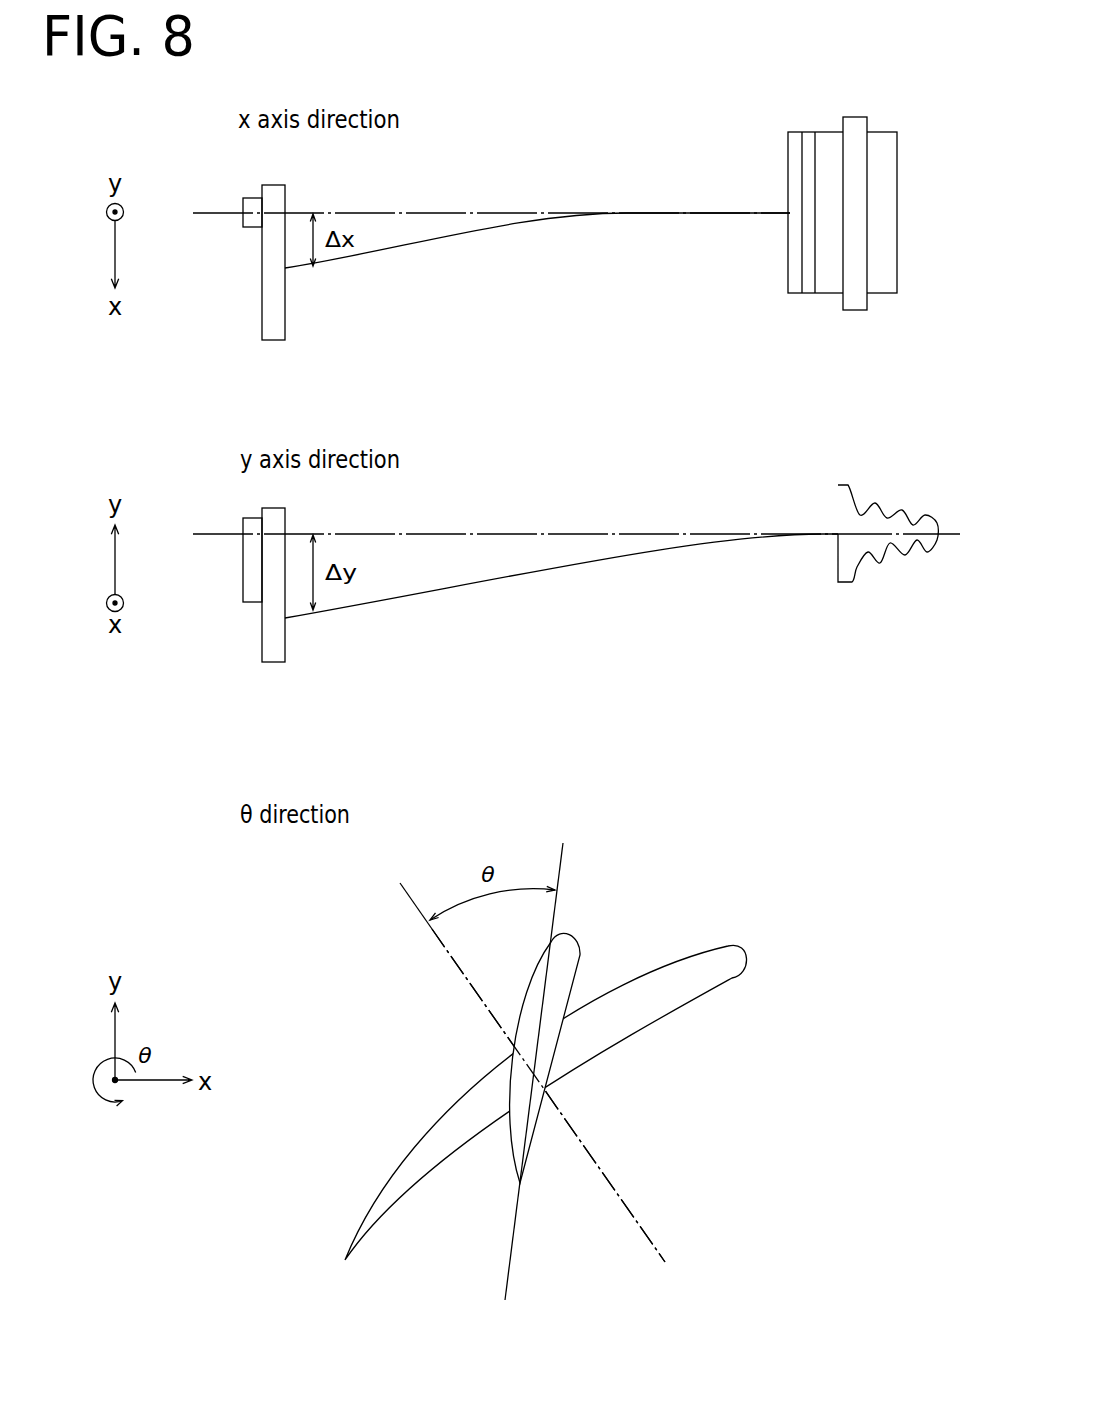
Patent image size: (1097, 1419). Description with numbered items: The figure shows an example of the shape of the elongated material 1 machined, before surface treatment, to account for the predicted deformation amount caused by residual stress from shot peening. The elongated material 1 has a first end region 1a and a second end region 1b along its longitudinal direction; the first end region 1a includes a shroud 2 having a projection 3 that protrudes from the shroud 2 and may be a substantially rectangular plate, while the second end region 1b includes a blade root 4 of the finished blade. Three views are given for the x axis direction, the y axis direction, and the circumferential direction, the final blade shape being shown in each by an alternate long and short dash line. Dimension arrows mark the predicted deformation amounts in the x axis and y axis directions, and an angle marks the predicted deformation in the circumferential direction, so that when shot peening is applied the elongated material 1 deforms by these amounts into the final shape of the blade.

The elongated material 1 is at (660, 161).
The first end region 1a is at (585, 919).
The second end region 1b is at (734, 927).
The shroud 2 is at (272, 292).
The projection 3 is at (248, 220).
The blade root 4 is at (888, 206).